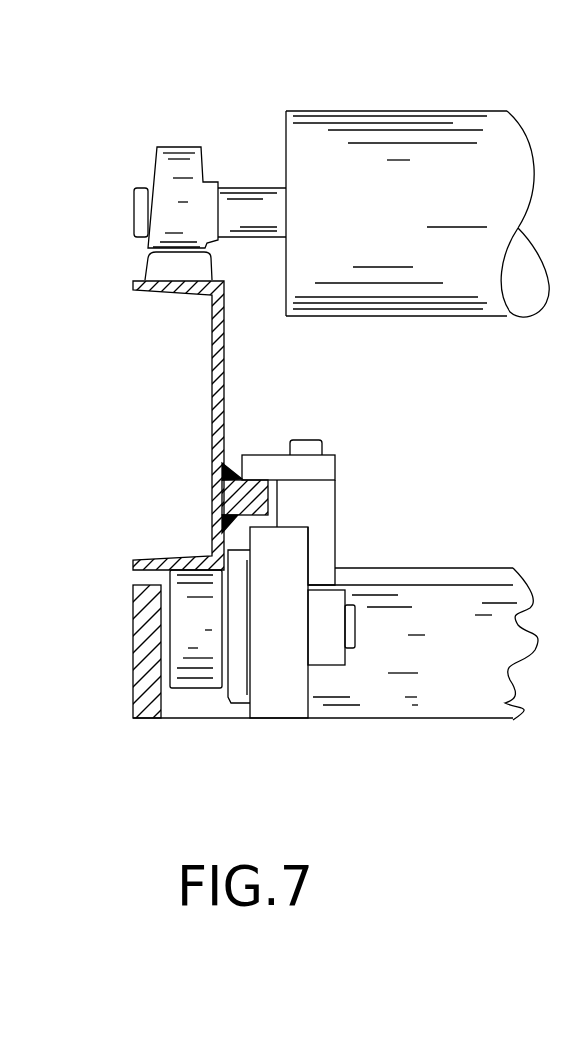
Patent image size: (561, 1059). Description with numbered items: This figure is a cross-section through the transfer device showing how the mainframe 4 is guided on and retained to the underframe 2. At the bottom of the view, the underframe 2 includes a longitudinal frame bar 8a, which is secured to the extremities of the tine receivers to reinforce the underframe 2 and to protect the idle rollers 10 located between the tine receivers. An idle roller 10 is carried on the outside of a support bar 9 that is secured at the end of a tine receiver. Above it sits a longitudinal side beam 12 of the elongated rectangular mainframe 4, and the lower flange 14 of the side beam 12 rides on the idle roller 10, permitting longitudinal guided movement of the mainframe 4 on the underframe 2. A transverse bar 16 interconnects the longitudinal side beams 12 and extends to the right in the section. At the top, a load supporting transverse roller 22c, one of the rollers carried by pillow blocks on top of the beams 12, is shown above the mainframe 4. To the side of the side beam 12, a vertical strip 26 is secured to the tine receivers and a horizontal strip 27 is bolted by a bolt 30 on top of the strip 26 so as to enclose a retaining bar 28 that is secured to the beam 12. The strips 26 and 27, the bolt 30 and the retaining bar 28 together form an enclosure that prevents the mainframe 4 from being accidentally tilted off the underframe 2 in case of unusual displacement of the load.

The load supporting transverse roller 22c is at (328, 147).
The mainframe 4 is at (180, 343).
The longitudinal side beam 12 is at (213, 423).
The lower flange 14 is at (152, 553).
The underframe 2 is at (267, 575).
The horizontal strip 27 is at (257, 450).
The bolt 30 is at (310, 440).
The retaining bar 28 is at (230, 500).
The vertical strip 26 is at (325, 517).
The support bar 9 is at (277, 698).
The idle roller 10 is at (197, 680).
The transverse bar 16 is at (453, 578).
The frame bar 8a is at (135, 653).